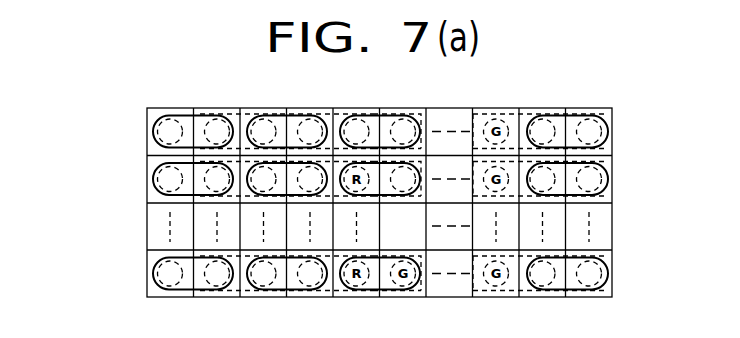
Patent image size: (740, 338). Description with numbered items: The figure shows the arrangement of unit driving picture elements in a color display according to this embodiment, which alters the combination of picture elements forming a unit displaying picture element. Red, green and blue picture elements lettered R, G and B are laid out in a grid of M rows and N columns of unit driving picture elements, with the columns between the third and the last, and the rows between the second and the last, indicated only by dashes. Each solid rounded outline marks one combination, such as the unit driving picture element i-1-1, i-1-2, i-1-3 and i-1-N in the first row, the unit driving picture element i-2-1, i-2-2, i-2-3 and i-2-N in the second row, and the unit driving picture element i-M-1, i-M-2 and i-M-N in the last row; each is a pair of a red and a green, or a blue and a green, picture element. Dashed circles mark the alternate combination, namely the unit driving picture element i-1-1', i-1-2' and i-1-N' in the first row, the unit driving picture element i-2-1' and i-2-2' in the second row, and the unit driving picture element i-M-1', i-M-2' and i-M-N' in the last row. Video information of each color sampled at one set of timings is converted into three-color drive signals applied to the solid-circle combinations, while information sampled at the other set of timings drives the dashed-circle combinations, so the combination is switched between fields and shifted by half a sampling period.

The unit driving picture element i-1-1 is at (159, 132).
The unit driving picture element i-1-1' is at (216, 115).
The unit driving picture element i-1-2 is at (297, 103).
The unit driving picture element i-1-2' is at (347, 113).
The unit driving picture element i-1-3 is at (409, 116).
The unit driving picture element i-1-N is at (567, 113).
The unit driving picture element i-1-N' is at (632, 136).
The unit driving picture element i-2-1 is at (153, 179).
The unit driving picture element i-2-1' is at (240, 138).
The unit driving picture element i-2-2 is at (192, 200).
The unit driving picture element i-2-2' is at (216, 218).
The unit driving picture element i-2-3 is at (421, 167).
The unit driving picture element i-2-N is at (604, 186).
The unit driving picture element i-M-1 is at (145, 280).
The unit driving picture element i-M-1' is at (201, 297).
The unit driving picture element i-M-2 is at (288, 298).
The unit driving picture element i-M-2' is at (359, 297).
The unit driving picture element i-M-N is at (572, 298).
The unit driving picture element i-M-N' is at (644, 279).